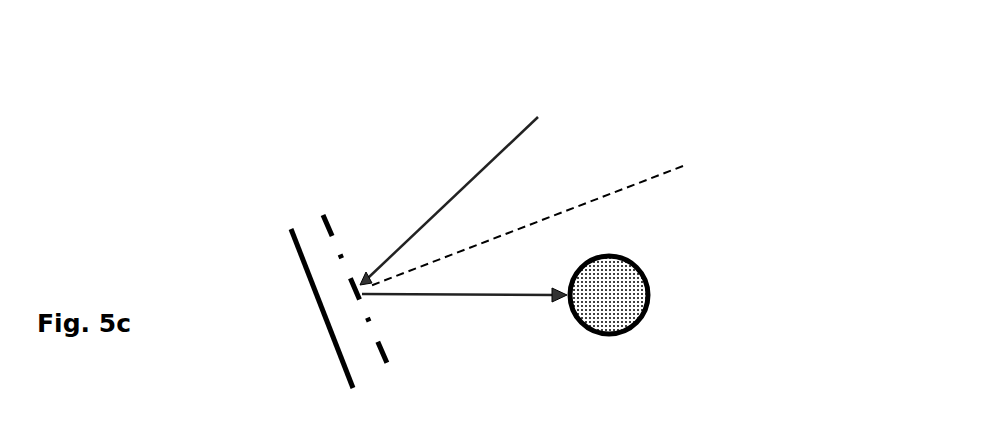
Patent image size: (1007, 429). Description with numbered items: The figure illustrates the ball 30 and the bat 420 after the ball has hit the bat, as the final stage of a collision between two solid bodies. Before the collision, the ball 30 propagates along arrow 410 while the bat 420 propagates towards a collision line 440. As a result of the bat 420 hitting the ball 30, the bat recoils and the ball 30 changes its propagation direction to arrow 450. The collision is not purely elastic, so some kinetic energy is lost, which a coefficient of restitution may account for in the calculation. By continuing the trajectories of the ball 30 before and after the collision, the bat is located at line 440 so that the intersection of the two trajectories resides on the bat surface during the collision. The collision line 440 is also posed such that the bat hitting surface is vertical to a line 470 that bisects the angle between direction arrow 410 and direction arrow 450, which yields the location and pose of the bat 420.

The ball 30 is at (645, 272).
The arrow 410 is at (520, 133).
The bat 420 is at (327, 338).
The collision line 440 is at (331, 222).
The arrow 450 is at (485, 295).
The line 470 is at (677, 168).